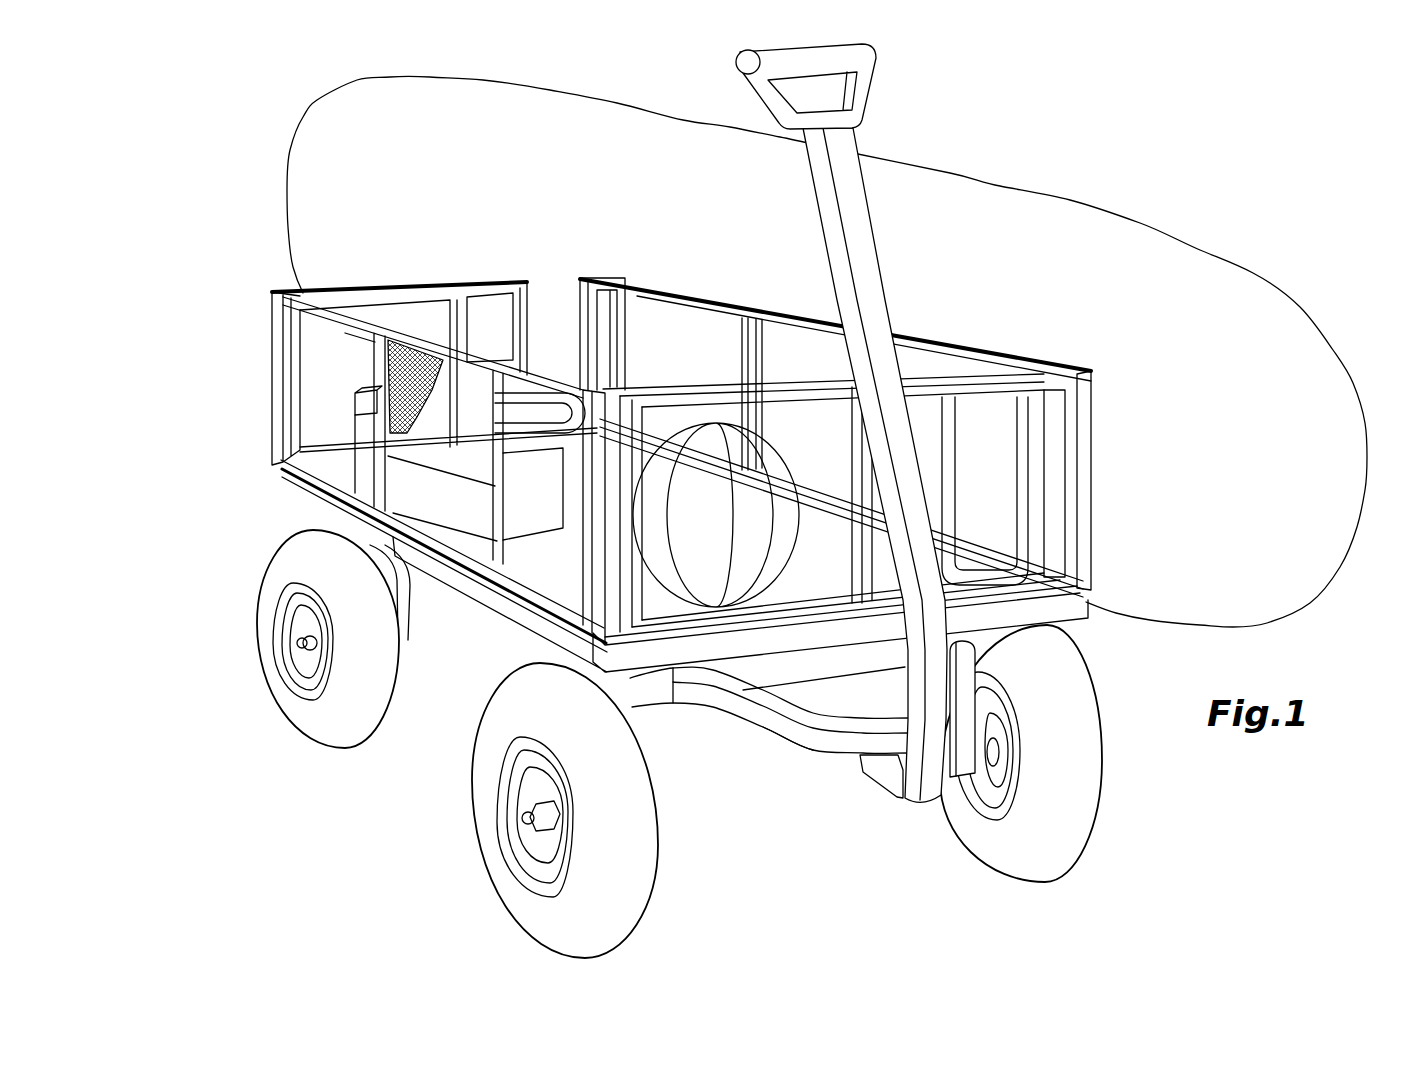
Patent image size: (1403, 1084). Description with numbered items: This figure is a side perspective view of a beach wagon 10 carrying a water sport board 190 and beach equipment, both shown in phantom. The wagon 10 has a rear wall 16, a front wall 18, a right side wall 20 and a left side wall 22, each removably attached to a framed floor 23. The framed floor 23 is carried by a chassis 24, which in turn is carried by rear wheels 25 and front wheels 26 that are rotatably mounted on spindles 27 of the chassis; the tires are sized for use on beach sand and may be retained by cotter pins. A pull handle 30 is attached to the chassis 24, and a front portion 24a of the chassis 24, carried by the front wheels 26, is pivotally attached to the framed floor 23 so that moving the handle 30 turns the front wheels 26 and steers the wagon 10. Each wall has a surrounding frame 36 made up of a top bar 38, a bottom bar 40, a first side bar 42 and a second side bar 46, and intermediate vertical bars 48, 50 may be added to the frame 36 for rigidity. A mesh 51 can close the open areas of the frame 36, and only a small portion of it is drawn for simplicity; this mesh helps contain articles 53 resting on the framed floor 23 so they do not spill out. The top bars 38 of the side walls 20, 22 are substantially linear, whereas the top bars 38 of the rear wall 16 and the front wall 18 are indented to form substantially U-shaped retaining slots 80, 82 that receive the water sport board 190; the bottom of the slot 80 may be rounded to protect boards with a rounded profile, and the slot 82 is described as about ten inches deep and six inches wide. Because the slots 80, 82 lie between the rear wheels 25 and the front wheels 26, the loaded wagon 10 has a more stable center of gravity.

The beach wagon 10 is at (752, 501).
The rear wall 16 is at (367, 291).
The front wall 18 is at (672, 388).
The right side wall 20 is at (543, 376).
The left side wall 22 is at (1000, 353).
The framed floor 23 is at (500, 605).
The chassis 24 is at (780, 735).
The front portion of the chassis 24a is at (832, 750).
The rear wheels 25 is at (390, 683).
The front wheels 26 is at (655, 853).
The spindles 27 is at (297, 645).
The pull handle 30 is at (882, 268).
The surrounding frame 36 is at (390, 328).
The top bar 38 is at (488, 287).
The bottom bar 40 is at (280, 478).
The first side bar 42 is at (273, 344).
The second side bar 46 is at (583, 563).
The intermediate vertical bar 48 is at (333, 497).
The intermediate vertical bar 50 is at (503, 487).
The mesh 51 is at (395, 437).
The articles 53 is at (353, 433).
The retaining slot 80 is at (570, 300).
The retaining slot 82 is at (958, 463).
The water sport board 190 is at (1075, 200).